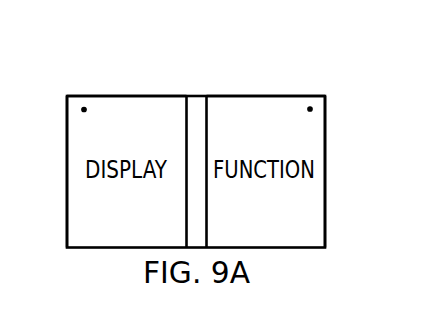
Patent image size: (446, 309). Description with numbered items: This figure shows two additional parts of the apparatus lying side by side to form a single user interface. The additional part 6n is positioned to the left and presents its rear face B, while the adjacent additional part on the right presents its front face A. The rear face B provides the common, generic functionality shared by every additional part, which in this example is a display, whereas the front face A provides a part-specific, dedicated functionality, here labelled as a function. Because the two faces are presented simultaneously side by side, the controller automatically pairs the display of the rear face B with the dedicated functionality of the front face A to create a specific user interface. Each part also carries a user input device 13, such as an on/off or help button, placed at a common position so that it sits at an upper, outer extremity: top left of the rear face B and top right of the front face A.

The additional part 6n is at (128, 95).
The user input device 13 is at (84, 110).
The rear face B is at (84, 220).
The front face A is at (307, 208).